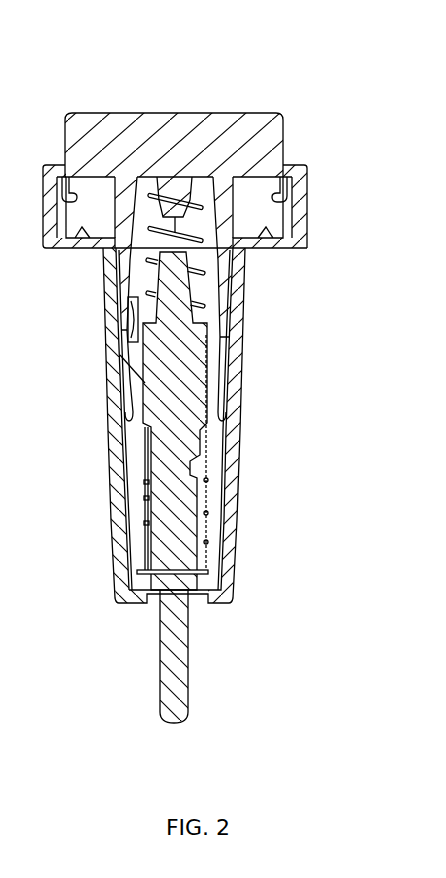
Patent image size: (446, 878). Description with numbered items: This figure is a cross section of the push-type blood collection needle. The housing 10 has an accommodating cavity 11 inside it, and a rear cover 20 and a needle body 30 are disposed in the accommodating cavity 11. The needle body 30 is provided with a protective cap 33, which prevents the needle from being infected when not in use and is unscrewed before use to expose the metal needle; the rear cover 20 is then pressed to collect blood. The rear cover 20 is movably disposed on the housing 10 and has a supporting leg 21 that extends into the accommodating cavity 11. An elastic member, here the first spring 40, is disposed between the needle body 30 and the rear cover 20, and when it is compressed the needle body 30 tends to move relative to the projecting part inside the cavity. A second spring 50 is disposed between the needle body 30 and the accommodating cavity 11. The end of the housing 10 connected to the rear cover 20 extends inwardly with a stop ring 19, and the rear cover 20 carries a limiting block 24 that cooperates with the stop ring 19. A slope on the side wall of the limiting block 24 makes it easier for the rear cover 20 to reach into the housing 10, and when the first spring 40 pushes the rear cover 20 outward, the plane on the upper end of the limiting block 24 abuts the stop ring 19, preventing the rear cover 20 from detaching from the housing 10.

The housing 10 is at (233, 472).
The accommodating cavity 11 is at (135, 442).
The stop ring 19 is at (288, 173).
The rear cover 20 is at (192, 143).
The supporting leg 21 is at (125, 328).
The limiting block 24 is at (280, 182).
The needle body 30 is at (183, 407).
The protective cap 33 is at (173, 642).
The first spring 40 is at (205, 273).
The second spring 50 is at (204, 542).